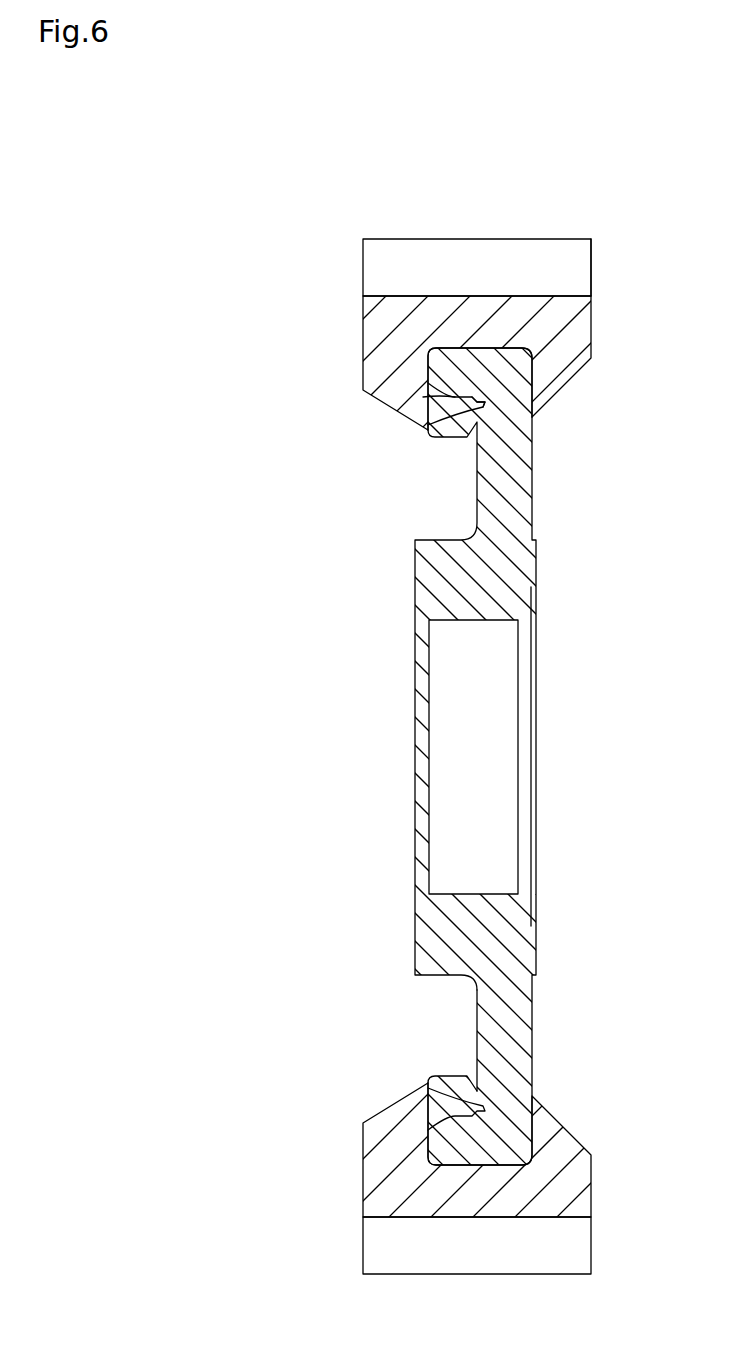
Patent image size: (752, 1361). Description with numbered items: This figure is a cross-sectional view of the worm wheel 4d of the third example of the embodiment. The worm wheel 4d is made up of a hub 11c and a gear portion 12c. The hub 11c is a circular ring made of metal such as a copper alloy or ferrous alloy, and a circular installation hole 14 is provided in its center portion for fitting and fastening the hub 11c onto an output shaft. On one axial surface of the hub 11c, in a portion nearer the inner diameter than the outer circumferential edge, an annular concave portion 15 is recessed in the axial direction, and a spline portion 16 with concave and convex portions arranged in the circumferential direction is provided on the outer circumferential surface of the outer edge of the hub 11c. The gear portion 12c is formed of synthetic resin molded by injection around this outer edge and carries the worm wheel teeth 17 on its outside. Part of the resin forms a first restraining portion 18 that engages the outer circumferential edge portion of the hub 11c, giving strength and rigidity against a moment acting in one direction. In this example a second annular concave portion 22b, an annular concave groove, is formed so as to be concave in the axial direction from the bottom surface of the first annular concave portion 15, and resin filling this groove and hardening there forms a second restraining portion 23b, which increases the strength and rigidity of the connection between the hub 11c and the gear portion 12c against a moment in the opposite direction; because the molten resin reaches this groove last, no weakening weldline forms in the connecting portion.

The worm wheel 4d is at (593, 227).
The hub 11c is at (537, 484).
The gear portion 12c is at (575, 326).
The installation hole 14 is at (487, 620).
The annular concave portion 15 is at (477, 1012).
The spline portion 16 is at (523, 364).
The worm wheel teeth 17 is at (414, 272).
The restraining portion 18 is at (427, 427).
The second annular concave portion 22b is at (490, 406).
The second restraining portion 23b is at (440, 1078).